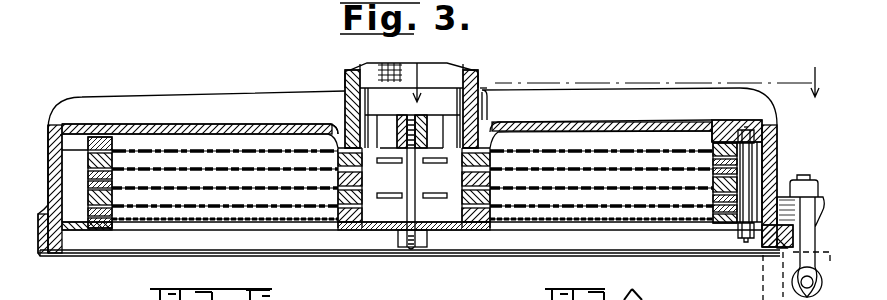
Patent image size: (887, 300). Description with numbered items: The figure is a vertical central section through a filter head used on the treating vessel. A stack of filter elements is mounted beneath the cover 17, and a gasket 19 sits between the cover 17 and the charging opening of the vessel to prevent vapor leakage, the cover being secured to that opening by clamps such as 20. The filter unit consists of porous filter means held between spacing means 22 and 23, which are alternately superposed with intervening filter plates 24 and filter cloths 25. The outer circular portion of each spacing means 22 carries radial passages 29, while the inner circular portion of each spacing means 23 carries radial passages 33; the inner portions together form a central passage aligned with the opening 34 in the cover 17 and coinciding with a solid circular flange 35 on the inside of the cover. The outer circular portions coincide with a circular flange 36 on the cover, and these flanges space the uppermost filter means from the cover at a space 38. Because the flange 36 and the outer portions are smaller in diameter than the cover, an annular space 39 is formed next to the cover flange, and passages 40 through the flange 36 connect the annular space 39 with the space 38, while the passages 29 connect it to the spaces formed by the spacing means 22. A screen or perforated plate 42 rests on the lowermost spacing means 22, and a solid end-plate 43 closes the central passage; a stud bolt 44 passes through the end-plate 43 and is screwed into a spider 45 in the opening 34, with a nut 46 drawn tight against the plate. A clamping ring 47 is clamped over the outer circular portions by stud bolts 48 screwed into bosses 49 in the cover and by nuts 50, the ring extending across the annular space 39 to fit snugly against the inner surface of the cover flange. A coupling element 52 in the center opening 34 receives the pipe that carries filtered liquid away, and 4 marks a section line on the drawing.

The section line / axis 4 is at (616, 67).
The cover 17 is at (667, 122).
The gasket 19 is at (46, 258).
The clamp 20 is at (796, 230).
The spacing means 22 is at (287, 177).
The spacing means 23 is at (262, 160).
The filter plate 24 is at (220, 182).
The filter cloth 25 is at (148, 175).
The passage 29 is at (707, 134).
The radial passage 33 is at (513, 166).
The opening 34 is at (474, 89).
The circular flange 35 is at (332, 133).
The circular flange 36 is at (728, 133).
The space 38 is at (602, 138).
The annular space 39 is at (66, 152).
The passage 40 is at (106, 138).
The screen or perforated plate 42 is at (299, 224).
The end-plate 43 is at (371, 232).
The stud bolt 44 is at (421, 248).
The spider 45 is at (437, 118).
The nut 46 is at (404, 250).
The clamping ring 47 is at (722, 230).
The stud bolt 48 is at (747, 176).
The boss 49 is at (755, 133).
The nut 50 is at (762, 234).
The coupling element 52 is at (355, 72).